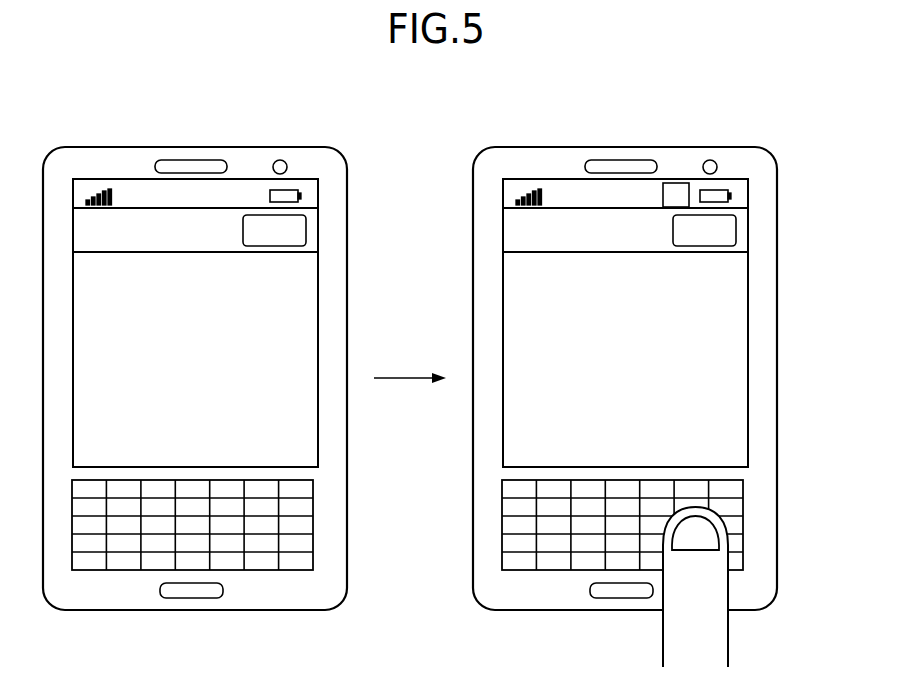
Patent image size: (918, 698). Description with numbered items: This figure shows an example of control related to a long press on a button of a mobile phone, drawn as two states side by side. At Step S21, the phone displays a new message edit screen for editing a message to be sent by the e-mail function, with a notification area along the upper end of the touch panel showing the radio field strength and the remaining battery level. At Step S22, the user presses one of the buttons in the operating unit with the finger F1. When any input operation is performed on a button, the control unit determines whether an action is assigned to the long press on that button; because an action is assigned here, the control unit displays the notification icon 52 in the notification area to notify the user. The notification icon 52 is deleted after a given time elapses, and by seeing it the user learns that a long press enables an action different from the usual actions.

The notification icon 52 is at (673, 183).
The finger F1 is at (728, 641).
The Step S21 is at (302, 128).
The Step S22 is at (736, 128).